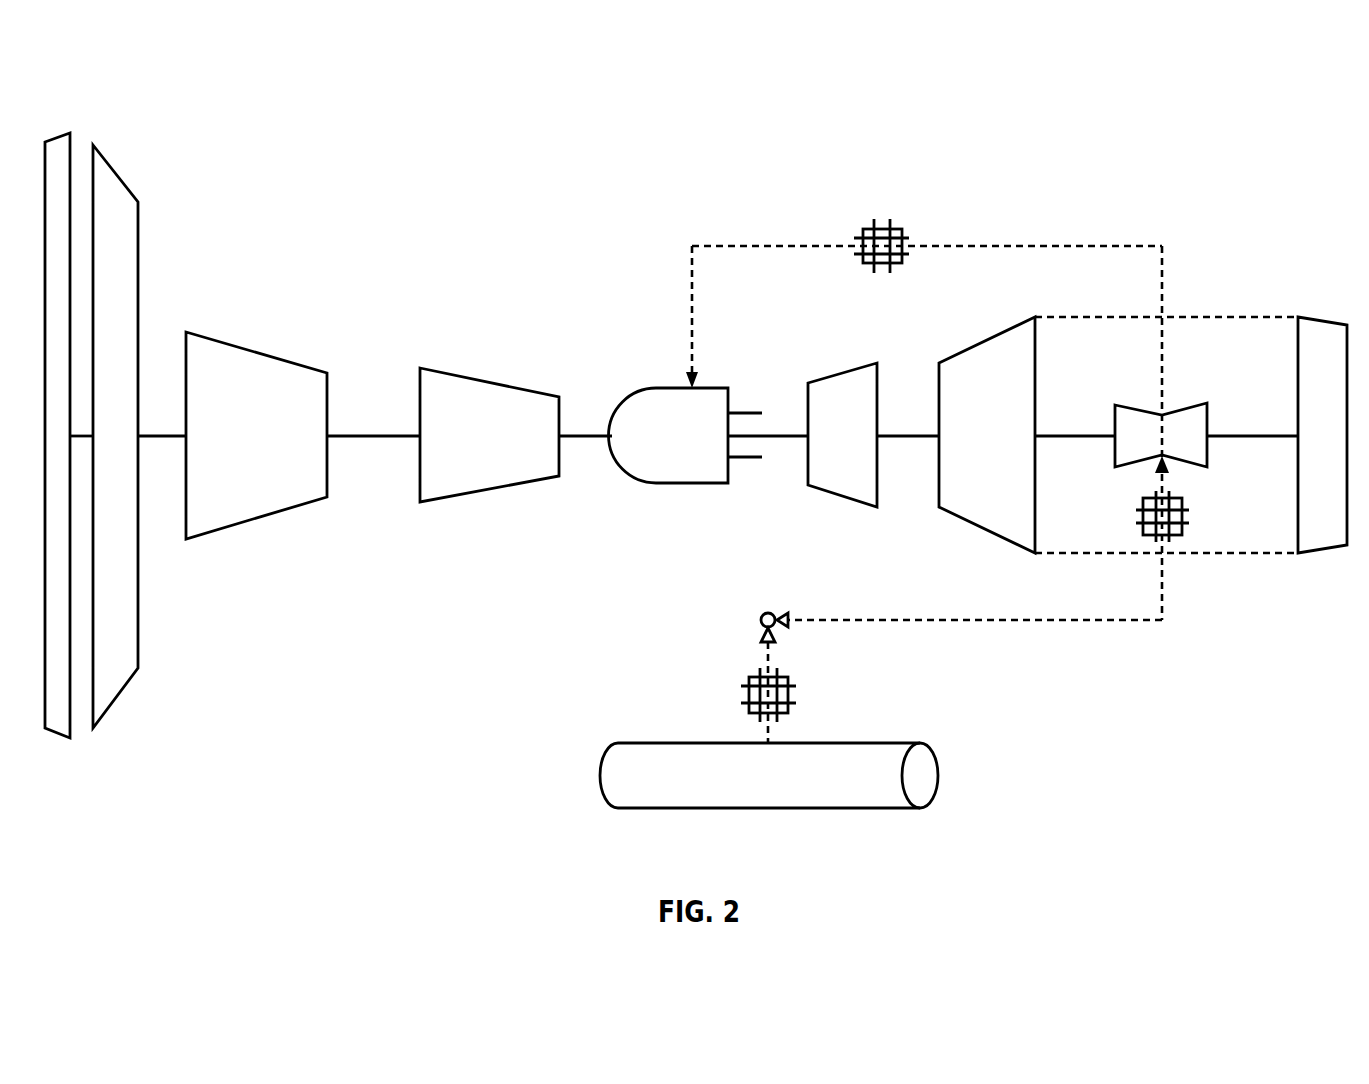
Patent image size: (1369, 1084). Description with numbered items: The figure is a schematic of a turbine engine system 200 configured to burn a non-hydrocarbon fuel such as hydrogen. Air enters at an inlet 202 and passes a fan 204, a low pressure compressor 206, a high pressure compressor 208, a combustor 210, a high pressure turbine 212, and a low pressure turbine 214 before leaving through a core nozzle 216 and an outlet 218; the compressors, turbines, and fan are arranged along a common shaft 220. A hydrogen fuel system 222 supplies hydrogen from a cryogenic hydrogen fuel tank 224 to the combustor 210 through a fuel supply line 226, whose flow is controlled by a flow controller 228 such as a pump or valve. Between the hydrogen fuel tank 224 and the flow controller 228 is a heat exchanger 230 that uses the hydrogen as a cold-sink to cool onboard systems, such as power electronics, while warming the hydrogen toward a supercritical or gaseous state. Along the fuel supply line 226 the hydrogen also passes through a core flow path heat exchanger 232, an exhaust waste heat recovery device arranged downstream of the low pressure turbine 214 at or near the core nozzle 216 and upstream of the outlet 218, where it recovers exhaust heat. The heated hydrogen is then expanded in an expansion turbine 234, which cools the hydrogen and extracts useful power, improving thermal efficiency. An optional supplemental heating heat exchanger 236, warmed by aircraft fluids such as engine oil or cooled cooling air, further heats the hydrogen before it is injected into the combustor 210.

The turbine engine system 200 is at (1250, 124).
The inlet 202 is at (60, 145).
The fan 204 is at (115, 180).
The low pressure compressor 206 is at (240, 357).
The high pressure compressor 208 is at (477, 397).
The combustor 210 is at (708, 395).
The high pressure turbine 212 is at (848, 375).
The low pressure turbine 214 is at (995, 340).
The core nozzle 216 is at (1252, 553).
The outlet 218 is at (1317, 328).
The shaft 220 is at (348, 435).
The hydrogen fuel system 222 is at (958, 676).
The hydrogen fuel tank 224 is at (857, 793).
The fuel supply line 226 is at (898, 622).
The flow controller 228 is at (762, 620).
The heat exchanger 230 is at (790, 695).
The core flow path heat exchanger 232 is at (1172, 535).
The expansion turbine 234 is at (1180, 418).
The supplemental heating heat exchanger 236 is at (882, 223).